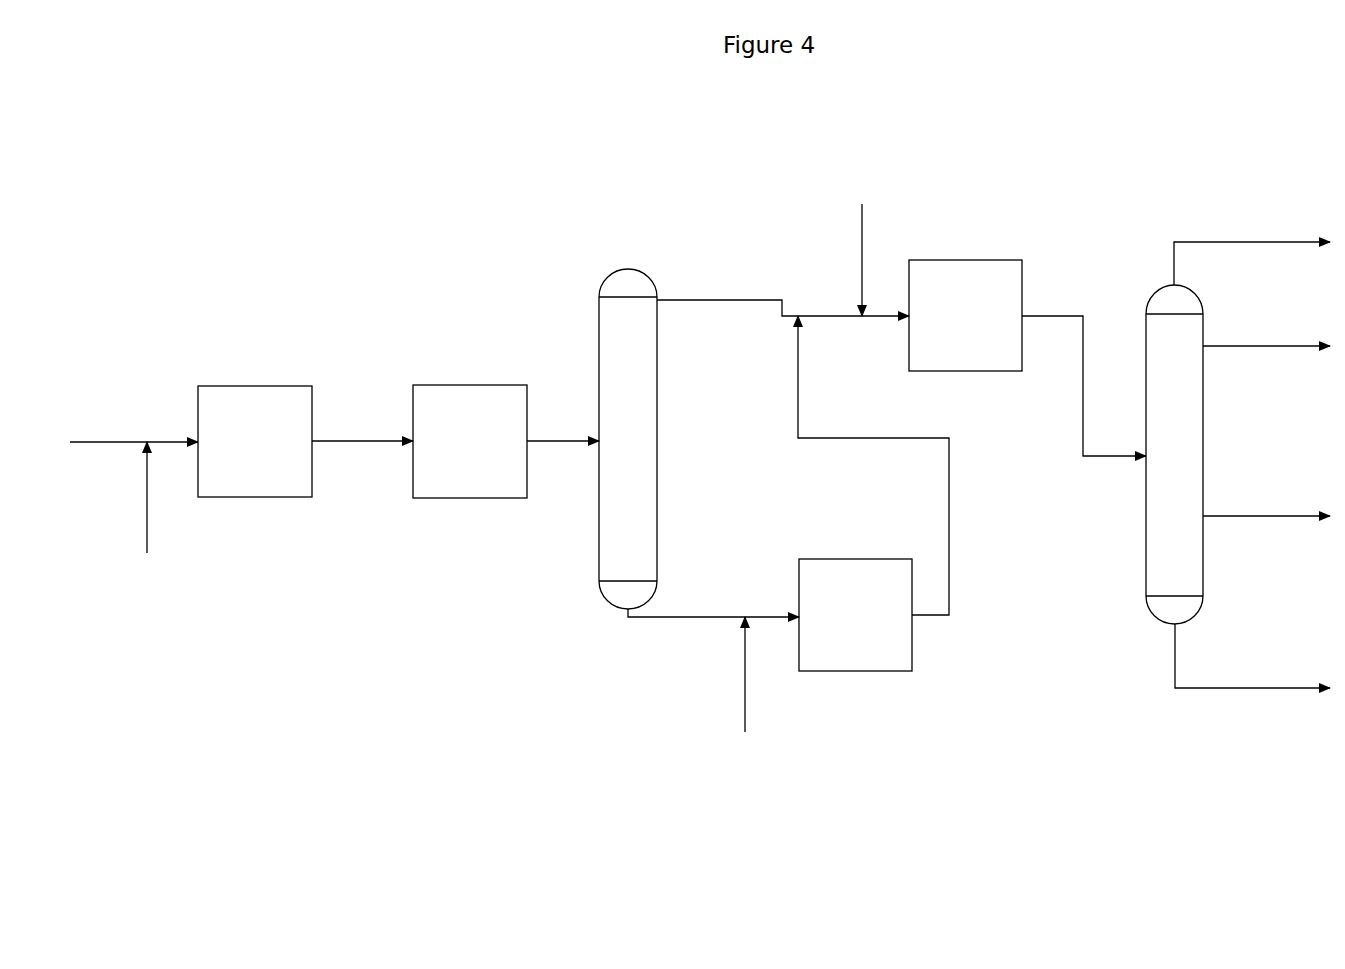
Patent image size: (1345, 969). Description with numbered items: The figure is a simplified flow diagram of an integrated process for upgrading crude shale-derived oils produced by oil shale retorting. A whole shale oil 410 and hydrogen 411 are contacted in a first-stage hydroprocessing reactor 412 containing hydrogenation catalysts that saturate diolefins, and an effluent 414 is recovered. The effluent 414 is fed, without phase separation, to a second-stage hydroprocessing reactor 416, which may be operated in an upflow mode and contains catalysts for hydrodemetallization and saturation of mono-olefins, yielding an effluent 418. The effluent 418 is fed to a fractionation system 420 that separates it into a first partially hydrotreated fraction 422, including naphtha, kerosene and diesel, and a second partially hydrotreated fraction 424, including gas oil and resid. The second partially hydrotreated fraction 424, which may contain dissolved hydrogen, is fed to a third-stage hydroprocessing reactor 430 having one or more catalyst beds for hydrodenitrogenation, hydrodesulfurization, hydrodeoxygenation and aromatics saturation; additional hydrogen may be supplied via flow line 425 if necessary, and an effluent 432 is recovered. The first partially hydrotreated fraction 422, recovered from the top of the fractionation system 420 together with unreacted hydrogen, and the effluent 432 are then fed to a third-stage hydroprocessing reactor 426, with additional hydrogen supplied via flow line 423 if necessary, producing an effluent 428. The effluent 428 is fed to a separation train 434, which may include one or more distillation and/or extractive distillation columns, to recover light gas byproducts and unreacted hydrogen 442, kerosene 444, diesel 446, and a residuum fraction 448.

The whole shale oil 410 is at (108, 442).
The hydrogen 411 is at (144, 534).
The first-stage hydroprocessing reactor 412 is at (255, 441).
The effluent 414 is at (348, 438).
The second-stage hydroprocessing reactor 416 is at (470, 441).
The effluent 418 is at (543, 437).
The fractionation system 420 is at (614, 263).
The first partially hydrotreated fraction 422 is at (698, 290).
The flow line 423 is at (857, 250).
The second partially hydrotreated fraction 424 is at (692, 610).
The flow line 425 is at (740, 701).
The third-stage hydroprocessing reactor 426 is at (965, 315).
The effluent 428 is at (1048, 310).
The third-stage hydroprocessing reactor 430 is at (855, 615).
The effluent 432 is at (858, 432).
The separation train 434 is at (1156, 292).
The light gas byproducts and unreacted hydrogen 442 is at (1236, 240).
The kerosene 444 is at (1260, 343).
The diesel 446 is at (1262, 512).
The residuum fraction 448 is at (1273, 682).